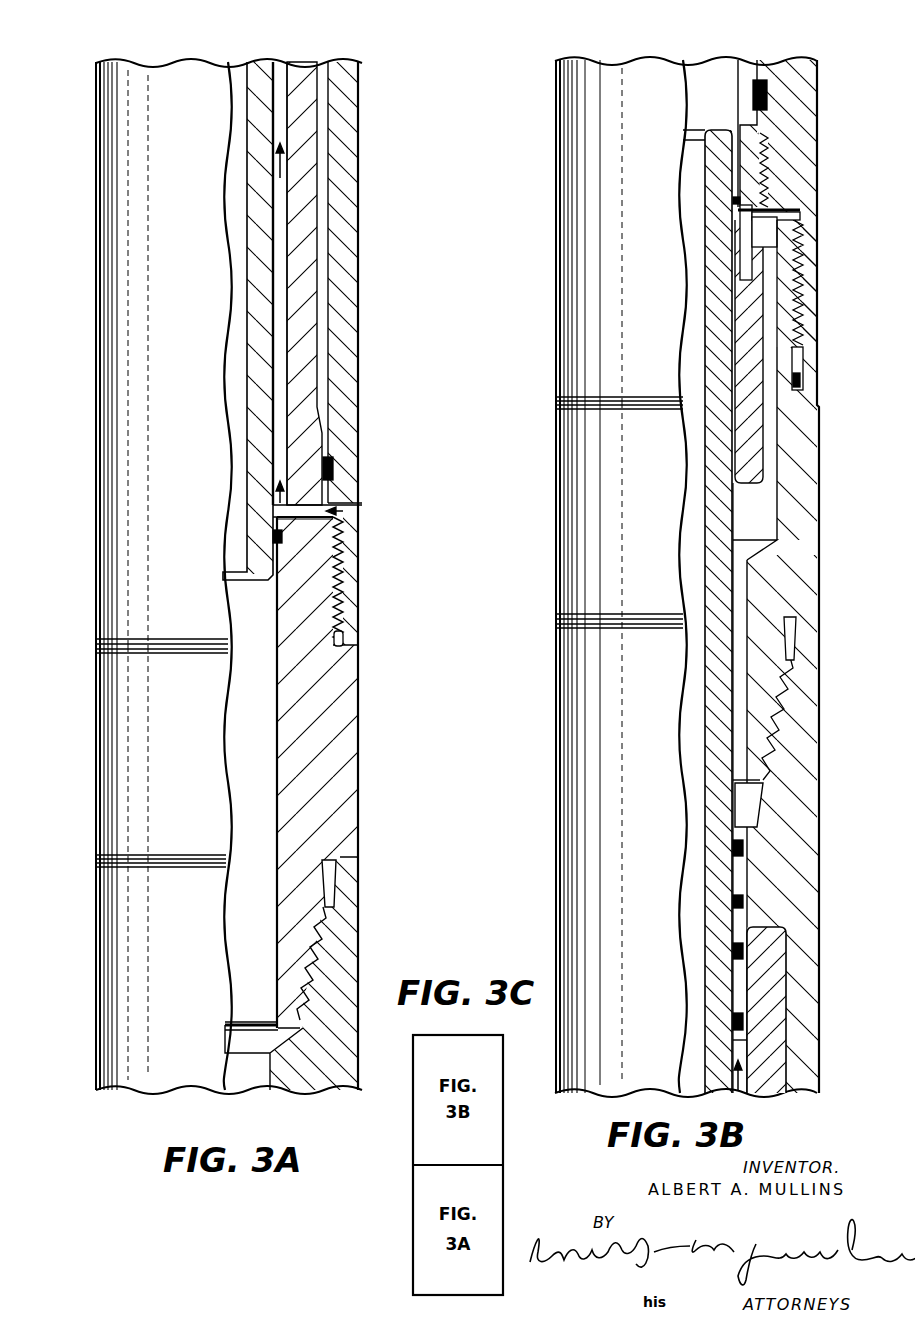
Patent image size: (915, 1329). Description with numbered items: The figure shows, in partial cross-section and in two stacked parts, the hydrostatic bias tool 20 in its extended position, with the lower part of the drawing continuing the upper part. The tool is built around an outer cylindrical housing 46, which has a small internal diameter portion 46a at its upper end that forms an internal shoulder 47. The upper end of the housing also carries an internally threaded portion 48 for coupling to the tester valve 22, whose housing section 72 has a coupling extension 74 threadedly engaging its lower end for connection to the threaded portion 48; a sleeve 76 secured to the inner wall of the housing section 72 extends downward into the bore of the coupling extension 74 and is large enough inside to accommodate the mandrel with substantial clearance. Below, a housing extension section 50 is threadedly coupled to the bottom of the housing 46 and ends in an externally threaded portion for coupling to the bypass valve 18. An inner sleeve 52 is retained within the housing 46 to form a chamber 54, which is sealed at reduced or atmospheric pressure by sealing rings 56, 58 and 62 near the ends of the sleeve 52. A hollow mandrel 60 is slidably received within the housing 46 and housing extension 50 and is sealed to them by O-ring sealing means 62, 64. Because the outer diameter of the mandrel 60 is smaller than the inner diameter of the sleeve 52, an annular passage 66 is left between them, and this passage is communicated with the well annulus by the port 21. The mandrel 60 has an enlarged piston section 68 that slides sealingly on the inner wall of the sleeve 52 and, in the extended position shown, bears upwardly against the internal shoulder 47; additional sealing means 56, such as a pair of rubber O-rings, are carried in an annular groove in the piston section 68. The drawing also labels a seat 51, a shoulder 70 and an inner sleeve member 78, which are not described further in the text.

In FIG. 3A, the bypass valve 18 is at (86, 989).
In FIG. 3A, the hydrostatic bias tool 20 is at (88, 467).
In FIG. 3B, the hydrostatic bias tool 20 is at (546, 836).
In FIG. 3A, the port 21 is at (358, 508).
In FIG. 3B, the tester valve 22 is at (546, 341).
In FIG. 3A, the outer cylindrical housing 46 is at (345, 282).
In FIG. 3B, the small internal diameter portion 46a is at (803, 847).
In FIG. 3B, the internal shoulder 47 is at (751, 940).
In FIG. 3B, the internally threaded portion 48 is at (803, 693).
In FIG. 3A, the housing extension section 50 is at (343, 735).
In FIG. 3A, the seat 51 is at (303, 518).
In FIG. 3A, the inner sleeve 52 is at (305, 213).
In FIG. 3B, the inner sleeve 52 is at (767, 1058).
In FIG. 3A, the chamber 54 is at (323, 163).
In FIG. 3B, the sealing rings 56 is at (740, 1023).
In FIG. 3A, the sealing ring 58 is at (330, 468).
In FIG. 3A, the hollow mandrel 60 is at (265, 252).
In FIG. 3B, the hollow mandrel 60 is at (722, 510).
In FIG. 3B, the O-ring sealing means 62 is at (740, 847).
In FIG. 3A, the O-ring sealing means 64 is at (280, 538).
In FIG. 3A, the annular passage 66 is at (278, 343).
In FIG. 3B, the annular passage 66 is at (742, 1093).
In FIG. 3B, the enlarged piston section 68 is at (742, 957).
In FIG. 3B, the shoulder 70 is at (743, 1040).
In FIG. 3B, the housing section 72 is at (803, 113).
In FIG. 3B, the coupling extension 74 is at (805, 457).
In FIG. 3B, the sleeve 76 is at (745, 62).
In FIG. 3B, the inner sleeve member 78 is at (747, 247).